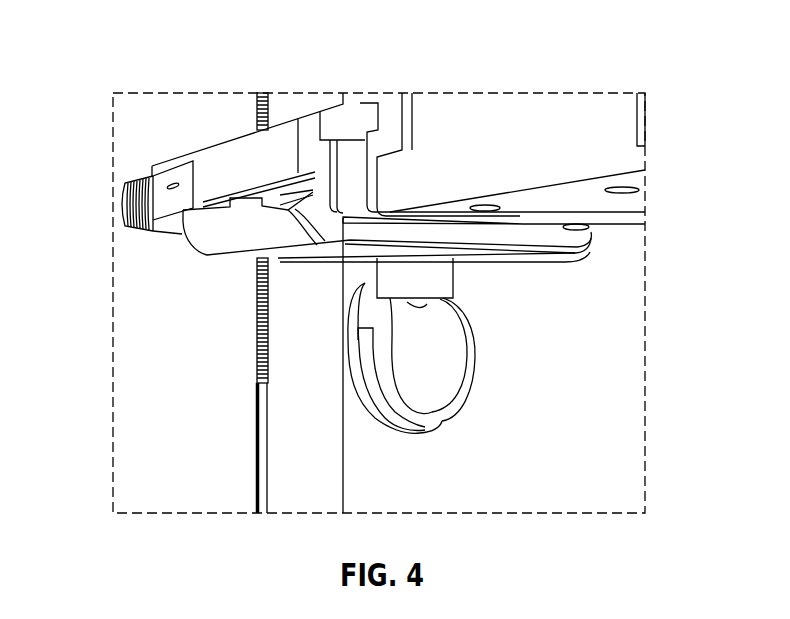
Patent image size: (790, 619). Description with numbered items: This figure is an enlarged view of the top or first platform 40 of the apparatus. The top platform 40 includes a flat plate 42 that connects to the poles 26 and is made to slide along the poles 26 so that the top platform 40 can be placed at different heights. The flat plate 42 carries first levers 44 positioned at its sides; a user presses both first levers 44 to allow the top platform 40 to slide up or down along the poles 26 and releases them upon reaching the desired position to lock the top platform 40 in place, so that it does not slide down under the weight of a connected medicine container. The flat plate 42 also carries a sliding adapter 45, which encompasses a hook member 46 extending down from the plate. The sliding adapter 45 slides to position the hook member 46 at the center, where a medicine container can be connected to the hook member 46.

The top platform 40 is at (528, 132).
The flat plate 42 is at (242, 152).
The first levers 44 is at (167, 210).
The sliding adapter 45 is at (268, 230).
The hook member 46 is at (387, 387).
The poles 26 is at (310, 464).